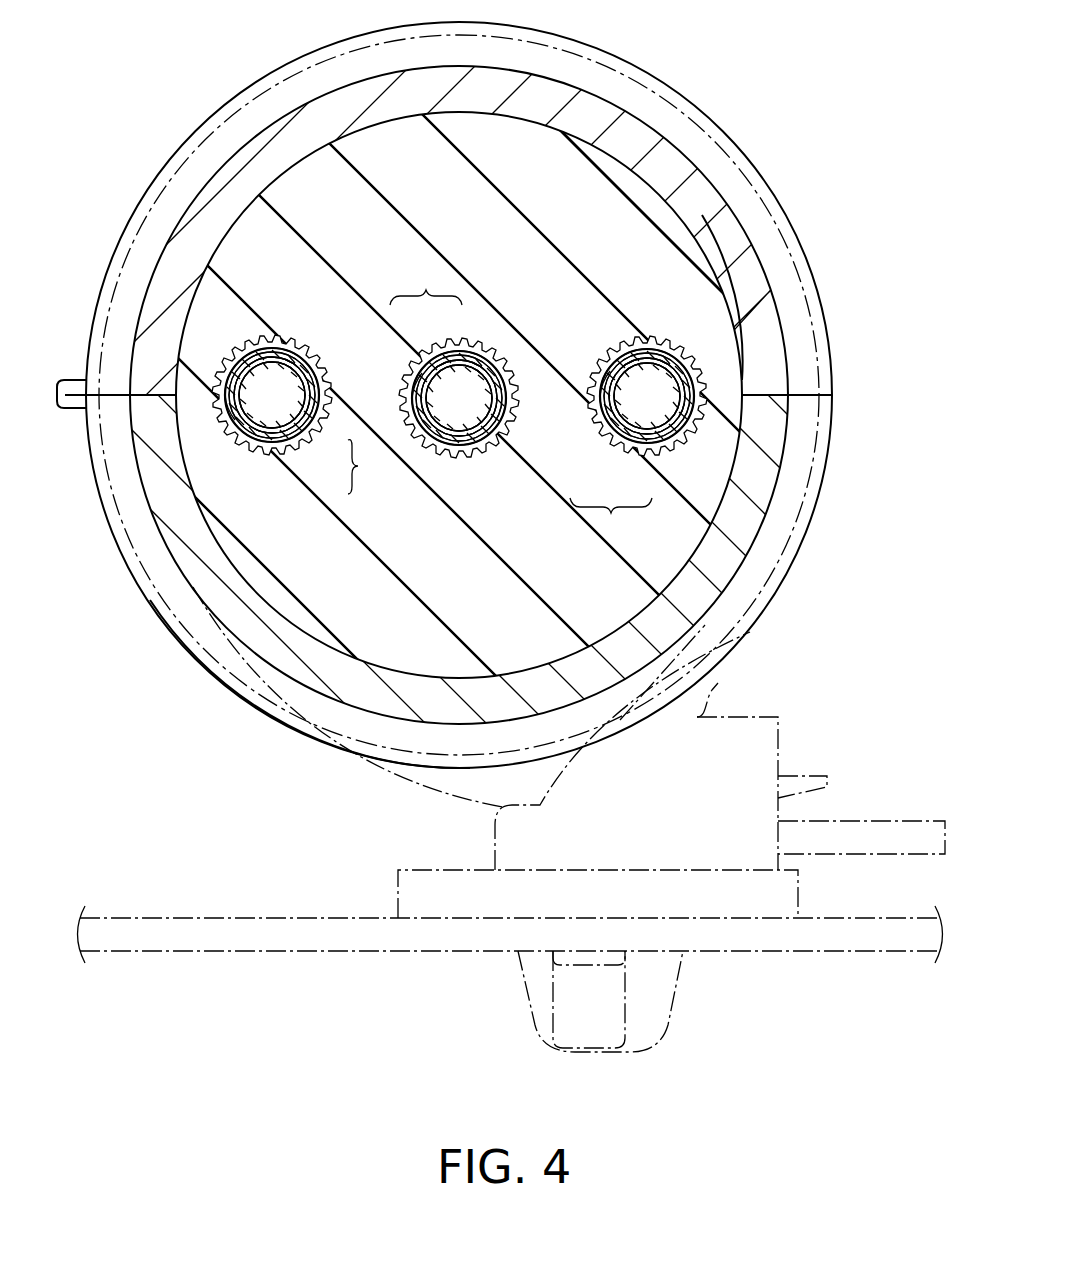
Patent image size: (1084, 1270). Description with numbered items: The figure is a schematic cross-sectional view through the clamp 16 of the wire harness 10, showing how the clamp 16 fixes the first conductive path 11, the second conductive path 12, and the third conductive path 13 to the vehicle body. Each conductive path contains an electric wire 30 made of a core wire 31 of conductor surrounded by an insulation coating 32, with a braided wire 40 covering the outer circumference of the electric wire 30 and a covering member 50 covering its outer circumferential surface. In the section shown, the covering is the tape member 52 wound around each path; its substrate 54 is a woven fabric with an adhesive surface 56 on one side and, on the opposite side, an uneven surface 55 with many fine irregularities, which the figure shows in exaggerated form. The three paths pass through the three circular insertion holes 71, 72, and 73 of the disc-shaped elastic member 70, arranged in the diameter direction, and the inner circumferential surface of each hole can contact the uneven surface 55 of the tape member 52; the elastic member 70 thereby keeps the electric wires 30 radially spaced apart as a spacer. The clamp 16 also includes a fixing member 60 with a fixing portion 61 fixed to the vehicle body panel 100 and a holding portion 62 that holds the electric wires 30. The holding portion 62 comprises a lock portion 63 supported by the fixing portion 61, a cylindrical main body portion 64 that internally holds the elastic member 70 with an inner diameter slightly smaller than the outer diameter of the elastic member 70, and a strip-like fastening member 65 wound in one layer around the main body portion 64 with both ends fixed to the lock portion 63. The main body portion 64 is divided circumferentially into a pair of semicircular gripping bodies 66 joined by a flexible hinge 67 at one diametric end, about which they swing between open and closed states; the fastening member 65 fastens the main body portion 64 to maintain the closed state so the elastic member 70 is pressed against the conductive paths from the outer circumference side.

The wire harness 10 is at (835, 124).
The first conductive path 11 is at (303, 343).
The second conductive path 12 is at (492, 342).
The third conductive path 13 is at (665, 342).
The clamp 16 is at (678, 88).
The electric wire 30 is at (500, 399).
The core wire 31 is at (428, 365).
The insulation coating 32 is at (470, 362).
The braided wire 40 is at (224, 380).
The covering member 50 is at (500, 235).
The tape member 52 is at (262, 492).
The substrate 54 is at (318, 370).
The uneven surface 55 is at (255, 335).
The adhesive surface 56 is at (459, 396).
The fixing member 60 is at (396, 883).
The fixing portion 61 is at (672, 992).
The holding portion 62 is at (275, 728).
The lock portion 63 is at (780, 736).
The main body portion 64 is at (280, 125).
The fastening member 65 is at (196, 148).
The gripping bodies 66 is at (762, 330).
The hinge 67 is at (72, 385).
The elastic member 70 is at (704, 214).
The insertion hole 71 is at (245, 440).
The insertion hole 72 is at (398, 388).
The insertion hole 73 is at (600, 362).
The vehicle body panel 100 is at (144, 916).